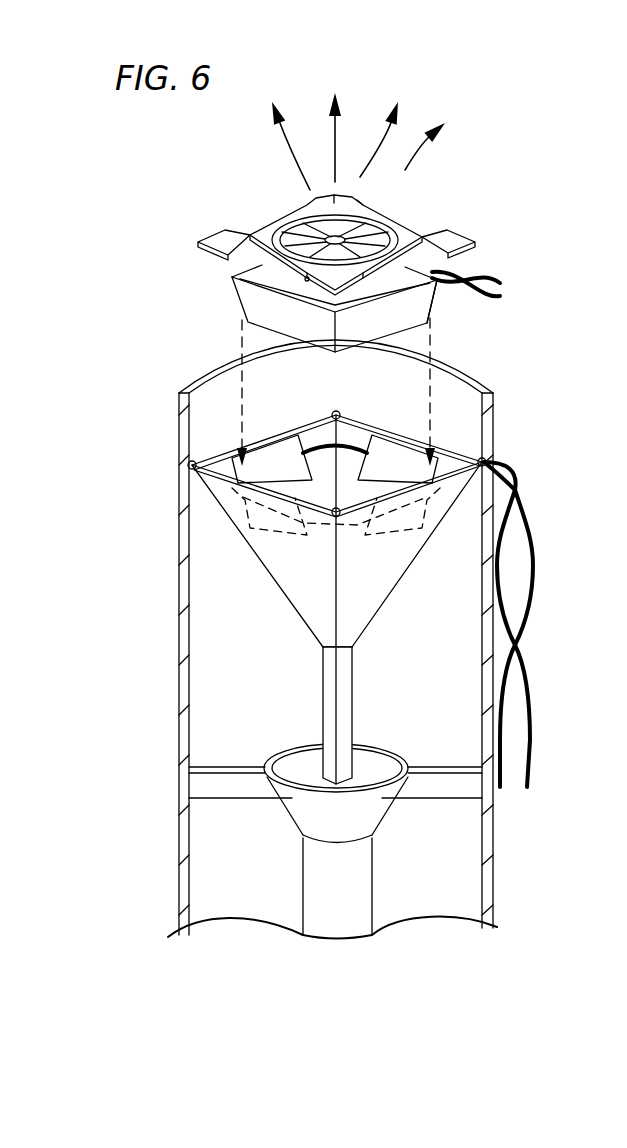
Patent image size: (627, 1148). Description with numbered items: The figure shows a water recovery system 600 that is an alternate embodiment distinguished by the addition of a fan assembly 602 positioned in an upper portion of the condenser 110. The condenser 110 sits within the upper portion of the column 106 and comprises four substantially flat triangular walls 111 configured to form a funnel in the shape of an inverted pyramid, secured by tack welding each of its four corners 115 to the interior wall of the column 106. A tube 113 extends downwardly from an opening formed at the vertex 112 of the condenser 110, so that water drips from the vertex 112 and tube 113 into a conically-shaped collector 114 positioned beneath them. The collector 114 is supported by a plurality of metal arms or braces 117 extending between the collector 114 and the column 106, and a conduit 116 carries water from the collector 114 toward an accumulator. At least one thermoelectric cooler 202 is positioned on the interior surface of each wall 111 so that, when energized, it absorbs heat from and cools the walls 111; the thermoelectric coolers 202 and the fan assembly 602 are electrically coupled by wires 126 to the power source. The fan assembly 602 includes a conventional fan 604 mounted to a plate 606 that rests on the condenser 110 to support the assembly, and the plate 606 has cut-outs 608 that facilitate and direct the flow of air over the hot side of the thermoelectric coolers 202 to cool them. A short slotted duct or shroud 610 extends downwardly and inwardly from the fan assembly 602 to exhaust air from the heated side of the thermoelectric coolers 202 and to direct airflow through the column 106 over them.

The water recovery system 600 is at (317, 279).
The fan assembly 602 is at (218, 319).
The fan 604 is at (312, 237).
The plate 606 is at (357, 198).
The cut-outs 608 is at (262, 223).
The slotted duct or shroud 610 is at (427, 305).
The wires 126 is at (497, 282).
The column 106 is at (497, 833).
The condenser 110 is at (341, 645).
The walls 111 is at (320, 618).
The vertex 112 is at (340, 650).
The tube 113 is at (345, 722).
The collector 114 is at (298, 767).
The corners 115 is at (335, 412).
The conduit 116 is at (313, 858).
The support arms or braces 117 is at (203, 767).
The thermoelectric cooler (Peltier Junction Module) 202 is at (275, 450).